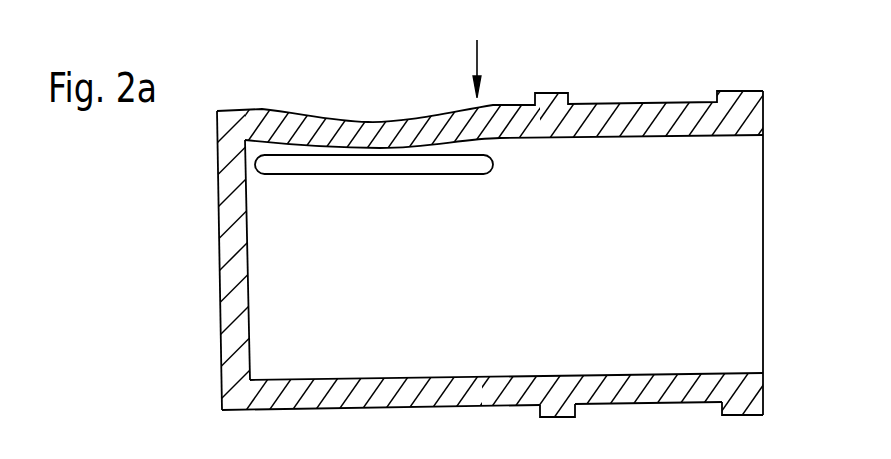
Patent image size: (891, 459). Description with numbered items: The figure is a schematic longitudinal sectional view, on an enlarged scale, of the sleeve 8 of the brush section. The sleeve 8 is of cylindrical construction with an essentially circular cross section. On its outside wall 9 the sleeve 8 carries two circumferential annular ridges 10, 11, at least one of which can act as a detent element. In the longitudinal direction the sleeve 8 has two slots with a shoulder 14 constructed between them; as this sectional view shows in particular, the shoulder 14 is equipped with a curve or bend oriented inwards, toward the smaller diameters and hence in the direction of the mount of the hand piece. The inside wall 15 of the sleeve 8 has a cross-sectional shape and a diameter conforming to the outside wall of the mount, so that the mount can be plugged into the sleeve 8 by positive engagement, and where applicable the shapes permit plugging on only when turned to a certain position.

The sleeve 8 is at (520, 229).
The outside wall 9 is at (373, 408).
The annular ridge 10 is at (550, 416).
The annular ridge 11 is at (740, 416).
The shoulder 14 is at (388, 138).
The inside wall 15 is at (637, 135).